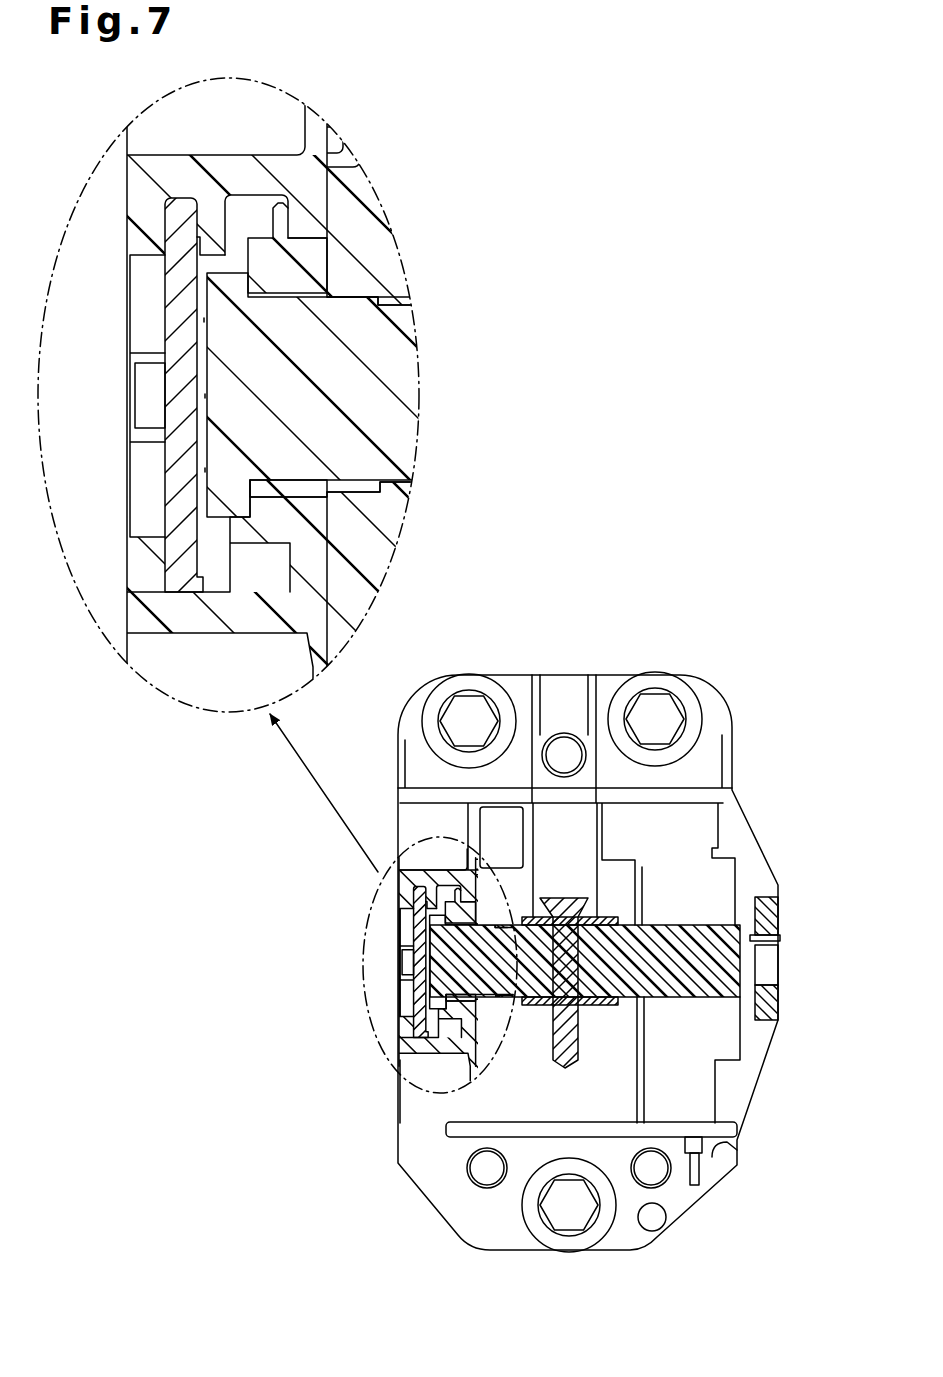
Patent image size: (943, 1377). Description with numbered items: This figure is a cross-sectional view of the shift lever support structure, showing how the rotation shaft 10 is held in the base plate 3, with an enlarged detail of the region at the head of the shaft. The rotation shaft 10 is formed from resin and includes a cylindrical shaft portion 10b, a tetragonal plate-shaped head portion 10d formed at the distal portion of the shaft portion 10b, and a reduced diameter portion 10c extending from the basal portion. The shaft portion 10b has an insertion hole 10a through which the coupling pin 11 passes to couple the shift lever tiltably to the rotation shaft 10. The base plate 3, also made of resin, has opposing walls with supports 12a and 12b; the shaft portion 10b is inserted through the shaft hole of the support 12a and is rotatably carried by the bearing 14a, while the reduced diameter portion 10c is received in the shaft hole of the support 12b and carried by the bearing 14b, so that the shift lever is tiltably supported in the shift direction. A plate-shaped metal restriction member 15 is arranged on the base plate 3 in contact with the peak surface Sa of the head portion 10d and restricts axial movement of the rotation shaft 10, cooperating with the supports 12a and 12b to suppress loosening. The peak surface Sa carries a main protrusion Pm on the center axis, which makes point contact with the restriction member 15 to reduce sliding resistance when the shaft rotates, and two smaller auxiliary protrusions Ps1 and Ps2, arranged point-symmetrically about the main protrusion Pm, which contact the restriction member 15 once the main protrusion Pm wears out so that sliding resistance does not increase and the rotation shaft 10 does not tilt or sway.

The base plate 3 is at (741, 640).
The rotation shaft 10 is at (403, 302).
The insertion hole 10a is at (577, 961).
The shaft portion 10b is at (354, 297).
The reduced diameter portion 10c is at (780, 962).
The head portion 10d is at (222, 250).
The coupling pin 11 is at (564, 898).
The support 12a is at (280, 233).
The support 12b is at (778, 913).
The bearing 14a is at (246, 236).
The bearing 14b is at (779, 939).
The restriction member 15 is at (165, 296).
The protrusion Ps1 is at (209, 321).
The protrusion Ps2 is at (209, 470).
The main protrusion Pm is at (209, 396).
The peak surface Sa is at (198, 427).